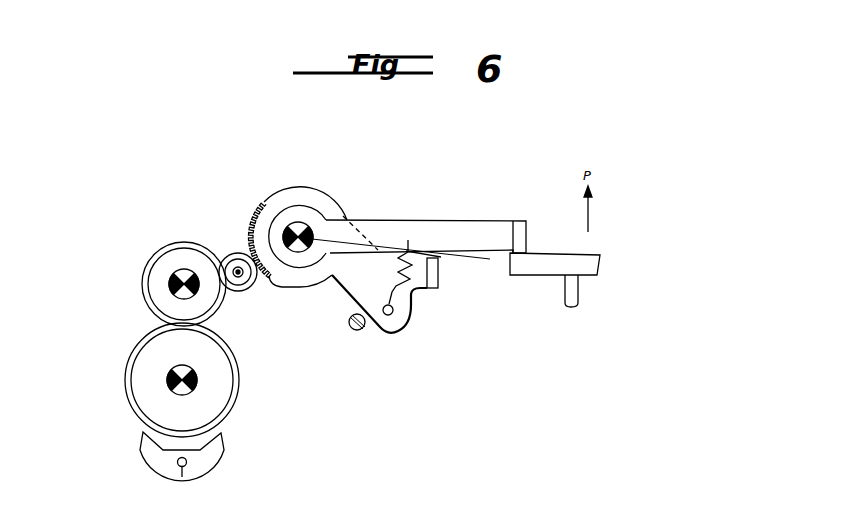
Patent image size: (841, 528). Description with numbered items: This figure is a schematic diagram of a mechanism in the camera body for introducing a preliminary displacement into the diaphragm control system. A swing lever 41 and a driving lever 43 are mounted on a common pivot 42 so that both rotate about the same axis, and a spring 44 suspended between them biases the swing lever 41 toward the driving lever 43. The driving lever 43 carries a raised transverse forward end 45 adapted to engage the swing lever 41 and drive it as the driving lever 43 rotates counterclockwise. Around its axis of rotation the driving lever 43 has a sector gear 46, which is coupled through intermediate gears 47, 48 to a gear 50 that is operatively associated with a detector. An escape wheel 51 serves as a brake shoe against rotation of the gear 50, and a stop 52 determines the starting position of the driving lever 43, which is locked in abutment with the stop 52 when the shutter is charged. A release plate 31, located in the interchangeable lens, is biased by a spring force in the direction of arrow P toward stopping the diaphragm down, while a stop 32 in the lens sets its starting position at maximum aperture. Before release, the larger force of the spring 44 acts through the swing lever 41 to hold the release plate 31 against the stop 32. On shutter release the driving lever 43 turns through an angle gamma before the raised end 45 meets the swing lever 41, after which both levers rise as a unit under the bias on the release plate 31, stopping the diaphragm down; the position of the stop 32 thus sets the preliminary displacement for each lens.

The release plate 31 is at (560, 269).
The stop 32 is at (574, 296).
The swing lever 41 is at (401, 229).
The pivot 42 is at (306, 221).
The driving lever 43 is at (331, 284).
The spring 44 is at (418, 294).
The raised transverse forward end 45 is at (439, 281).
The sector gear 46 is at (259, 216).
The intermediate gear 47 is at (240, 254).
The intermediate gear 48 is at (172, 263).
The gear 50 is at (143, 363).
The escape wheel 51 is at (150, 443).
The stop 52 is at (357, 331).